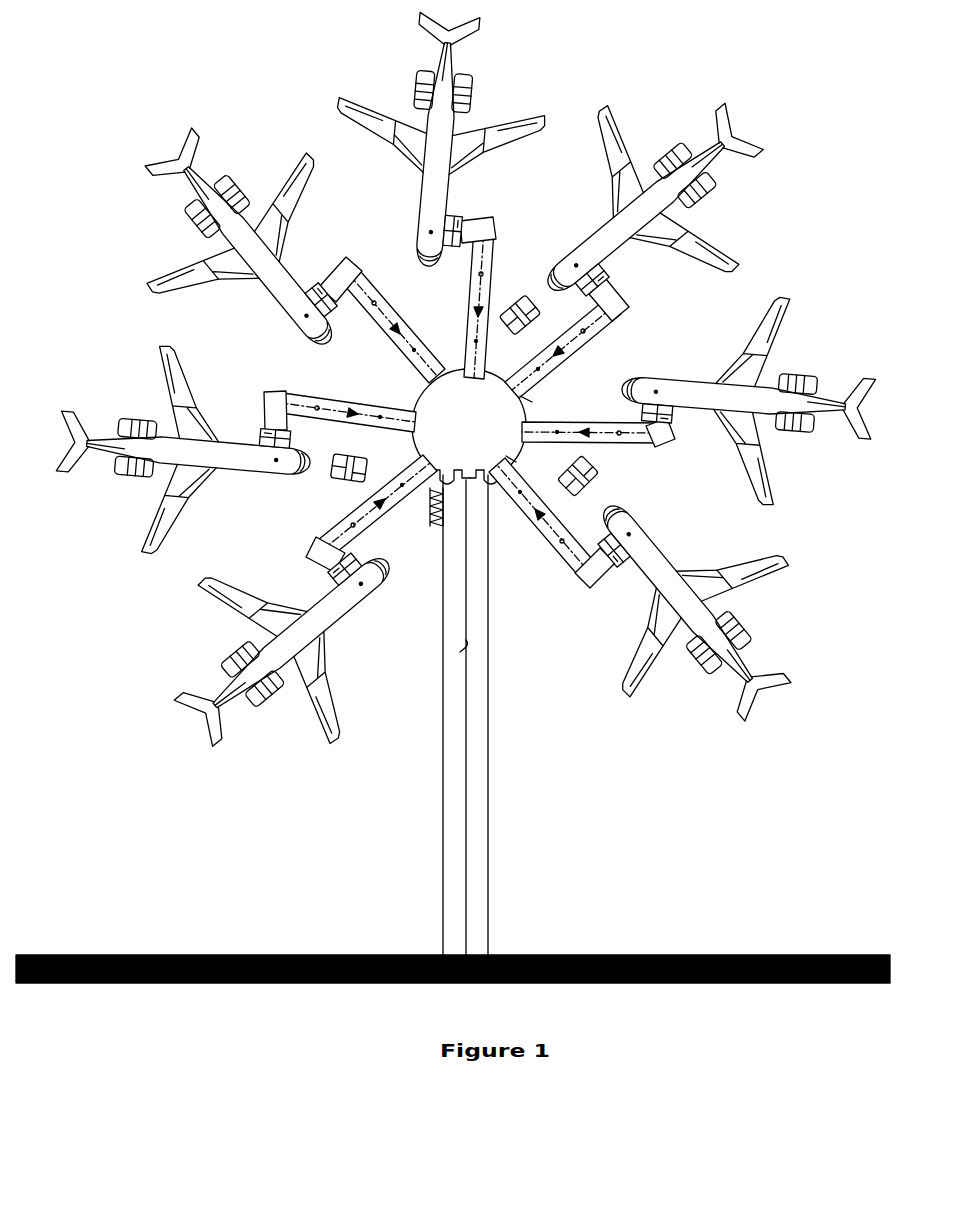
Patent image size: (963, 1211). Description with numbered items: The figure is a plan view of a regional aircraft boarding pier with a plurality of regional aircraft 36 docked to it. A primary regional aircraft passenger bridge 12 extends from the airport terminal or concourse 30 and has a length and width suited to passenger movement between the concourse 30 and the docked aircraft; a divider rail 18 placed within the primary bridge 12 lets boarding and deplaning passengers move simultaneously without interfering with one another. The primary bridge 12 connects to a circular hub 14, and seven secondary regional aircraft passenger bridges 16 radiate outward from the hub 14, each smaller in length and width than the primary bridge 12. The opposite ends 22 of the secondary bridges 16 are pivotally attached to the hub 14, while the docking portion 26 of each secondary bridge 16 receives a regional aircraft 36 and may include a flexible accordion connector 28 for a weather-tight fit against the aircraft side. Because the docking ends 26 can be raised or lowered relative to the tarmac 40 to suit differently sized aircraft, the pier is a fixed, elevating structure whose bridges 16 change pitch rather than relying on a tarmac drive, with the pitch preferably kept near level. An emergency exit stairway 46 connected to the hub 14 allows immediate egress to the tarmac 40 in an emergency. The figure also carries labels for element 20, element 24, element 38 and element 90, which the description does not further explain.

The tarmac 40 is at (676, 39).
The regional aircraft 36 is at (466, 404).
The secondary regional aircraft passenger bridge 16 is at (469, 417).
The hub 14 is at (475, 423).
The primary regional aircraft passenger bridge 12 is at (486, 759).
The airport terminal or concourse 30 is at (498, 1025).
The divider rail 18 is at (460, 652).
The hub bearing bracket 20 is at (488, 482).
The opposite ends 22 is at (472, 470).
The emergency exit stairway 46 is at (436, 516).
The arm pivot 24 is at (526, 400).
The arm pivot 38 is at (510, 458).
The docking portion 26 is at (584, 590).
The flexible accordion connector 28 is at (604, 576).
The tug vehicle 90 is at (588, 478).